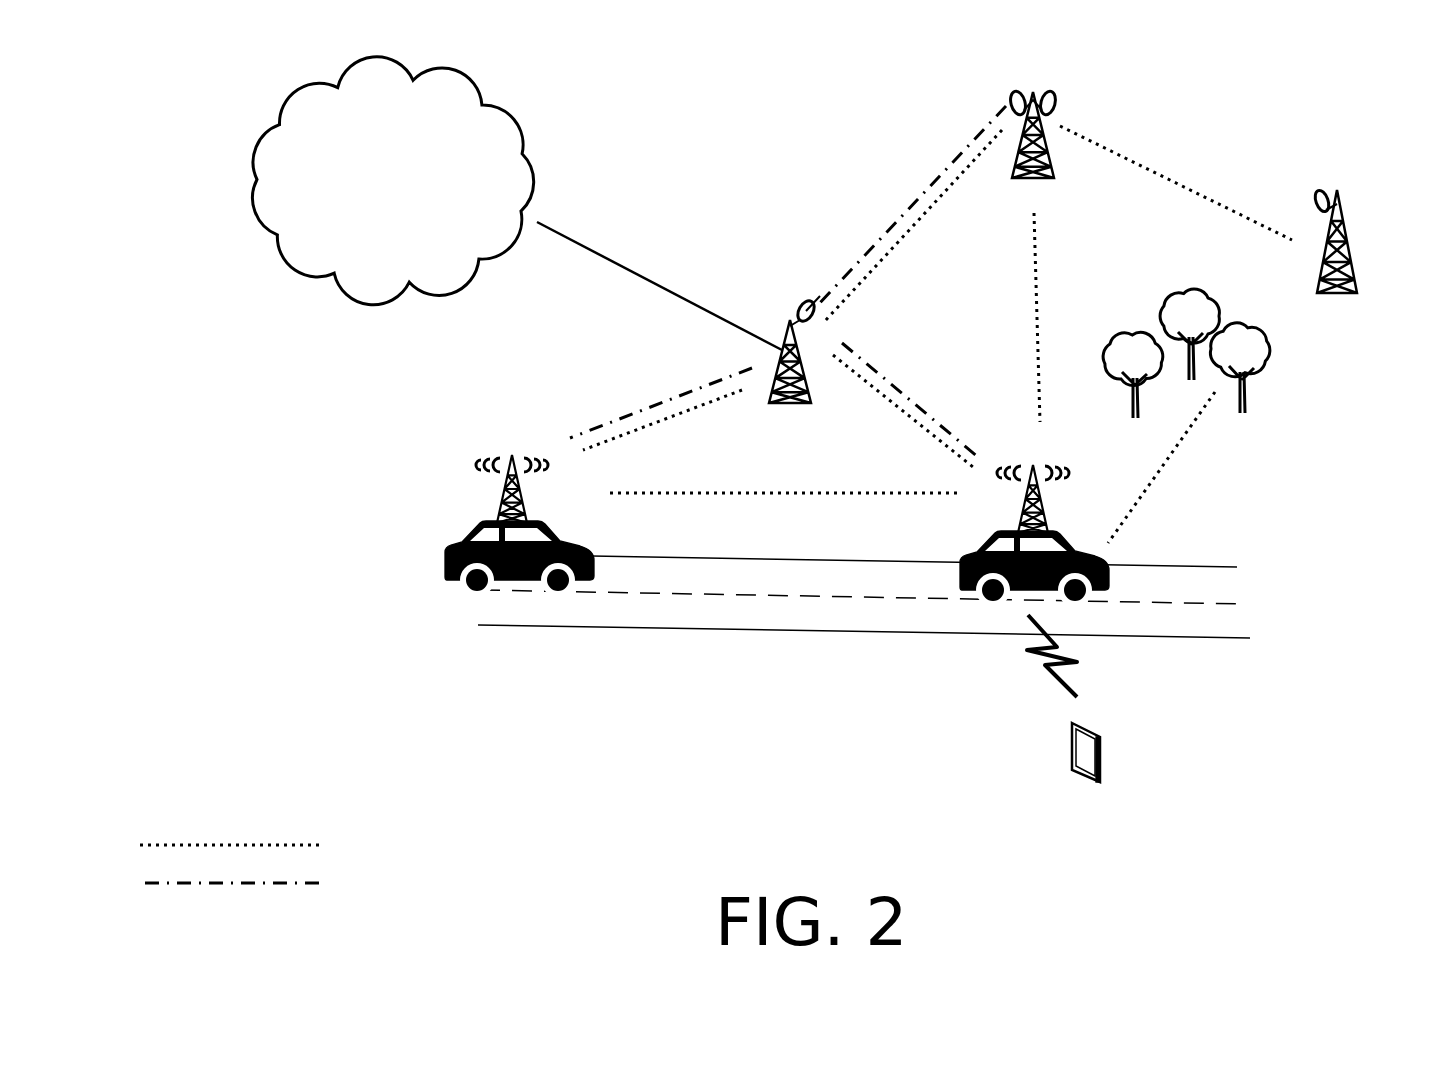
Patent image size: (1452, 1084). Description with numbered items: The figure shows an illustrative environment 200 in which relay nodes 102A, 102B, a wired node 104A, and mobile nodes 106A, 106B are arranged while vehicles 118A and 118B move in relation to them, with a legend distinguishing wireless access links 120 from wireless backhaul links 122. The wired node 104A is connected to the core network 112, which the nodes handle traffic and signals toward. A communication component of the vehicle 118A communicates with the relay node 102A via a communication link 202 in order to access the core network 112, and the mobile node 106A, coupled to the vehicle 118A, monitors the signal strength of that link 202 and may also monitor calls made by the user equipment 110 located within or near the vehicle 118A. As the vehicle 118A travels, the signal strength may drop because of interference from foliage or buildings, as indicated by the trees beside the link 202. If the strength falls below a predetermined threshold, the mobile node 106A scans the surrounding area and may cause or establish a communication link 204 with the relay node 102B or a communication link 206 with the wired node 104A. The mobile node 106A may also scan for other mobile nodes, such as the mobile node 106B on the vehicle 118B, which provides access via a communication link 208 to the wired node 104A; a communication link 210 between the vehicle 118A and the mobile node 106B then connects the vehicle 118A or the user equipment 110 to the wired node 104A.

The environment 200 is at (156, 122).
The core network 112 is at (393, 181).
The relay node 102A is at (1345, 226).
The relay node 102B is at (1033, 92).
The wired node 104A is at (790, 320).
The mobile node 106A is at (1063, 462).
The mobile node 106B is at (478, 458).
The vehicle 118A is at (987, 602).
The vehicle 118B is at (472, 592).
The user equipment 110 is at (1090, 780).
The communication link 202 is at (1145, 489).
The communication link 204 is at (1038, 322).
The communication link 206 is at (912, 418).
The communication link 208 is at (657, 421).
The communication link 210 is at (800, 495).
The wireless access links 120 is at (343, 850).
The wireless backhaul links 122 is at (346, 883).